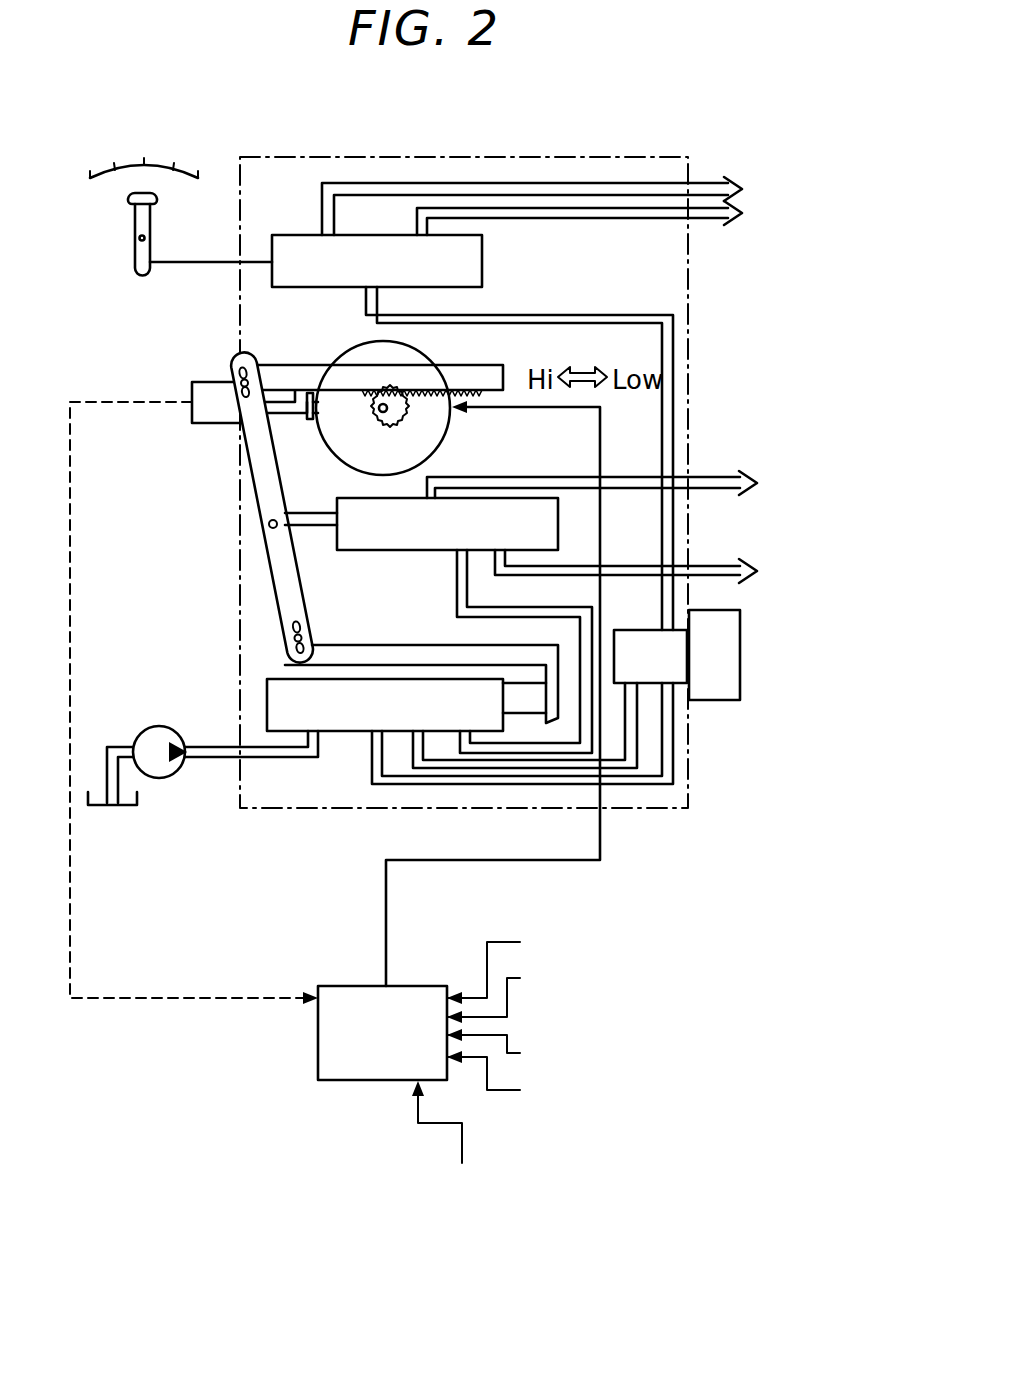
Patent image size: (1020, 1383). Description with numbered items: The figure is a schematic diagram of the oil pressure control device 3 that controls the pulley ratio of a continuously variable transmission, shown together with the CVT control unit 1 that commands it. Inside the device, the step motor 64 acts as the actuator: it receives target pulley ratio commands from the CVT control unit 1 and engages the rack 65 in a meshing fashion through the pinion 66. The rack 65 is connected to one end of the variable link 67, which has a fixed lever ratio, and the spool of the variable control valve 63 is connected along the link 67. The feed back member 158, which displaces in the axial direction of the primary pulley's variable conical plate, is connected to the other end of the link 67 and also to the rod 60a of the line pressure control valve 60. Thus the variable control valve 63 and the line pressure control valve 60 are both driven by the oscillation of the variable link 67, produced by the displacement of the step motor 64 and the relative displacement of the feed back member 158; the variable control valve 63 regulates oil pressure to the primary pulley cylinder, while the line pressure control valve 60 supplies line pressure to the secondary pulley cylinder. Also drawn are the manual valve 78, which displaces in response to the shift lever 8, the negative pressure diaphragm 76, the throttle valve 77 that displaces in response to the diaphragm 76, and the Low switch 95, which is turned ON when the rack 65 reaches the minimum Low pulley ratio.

The CVT control unit 1 is at (338, 985).
The oil pressure control device 3 is at (537, 156).
The shift lever 8 is at (133, 246).
The line pressure control valve 60 is at (362, 713).
The rod of the line pressure control valve 60a is at (512, 697).
The variable control valve 63 is at (410, 536).
The step motor 64 is at (452, 430).
The rack 65 is at (430, 398).
The pinion 66 is at (378, 418).
The variable link 67 is at (257, 445).
The negative pressure diaphragm 76 is at (718, 690).
The throttle valve 77 is at (640, 641).
The manual valve 78 is at (482, 254).
The Low switch 95 is at (207, 382).
The feed back member 158 is at (352, 648).